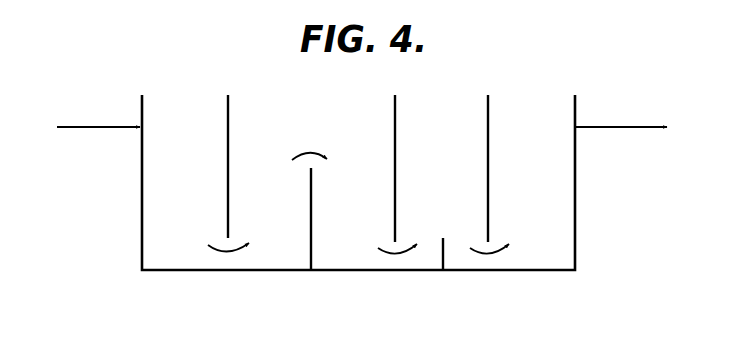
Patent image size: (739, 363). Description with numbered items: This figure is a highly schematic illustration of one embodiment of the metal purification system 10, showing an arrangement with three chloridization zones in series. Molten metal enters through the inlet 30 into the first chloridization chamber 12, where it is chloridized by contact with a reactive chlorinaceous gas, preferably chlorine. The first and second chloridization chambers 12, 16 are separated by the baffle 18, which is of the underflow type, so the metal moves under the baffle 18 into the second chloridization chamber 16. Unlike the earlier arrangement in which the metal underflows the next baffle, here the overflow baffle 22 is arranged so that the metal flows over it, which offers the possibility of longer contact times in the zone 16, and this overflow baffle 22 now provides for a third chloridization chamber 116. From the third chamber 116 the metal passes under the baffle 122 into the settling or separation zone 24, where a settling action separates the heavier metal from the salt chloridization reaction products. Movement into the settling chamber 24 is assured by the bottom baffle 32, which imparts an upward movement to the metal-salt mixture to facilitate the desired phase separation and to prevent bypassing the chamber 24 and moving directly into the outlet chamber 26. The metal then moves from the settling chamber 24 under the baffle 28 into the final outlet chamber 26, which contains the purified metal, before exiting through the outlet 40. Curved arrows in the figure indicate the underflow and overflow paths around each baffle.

The system 10 is at (358, 182).
The first chloridization chamber 12 is at (194, 215).
The second chloridization chamber 16 is at (281, 215).
The third chloridization chamber 116 is at (368, 215).
The settling chamber 24 is at (455, 183).
The outlet chamber 26 is at (545, 213).
The baffle 18 is at (228, 128).
The overflow baffle 22 is at (311, 230).
The baffle 122 is at (395, 128).
The baffle 28 is at (488, 126).
The bottom baffle 32 is at (445, 243).
The inlet 30 is at (91, 127).
The outlet 40 is at (622, 128).